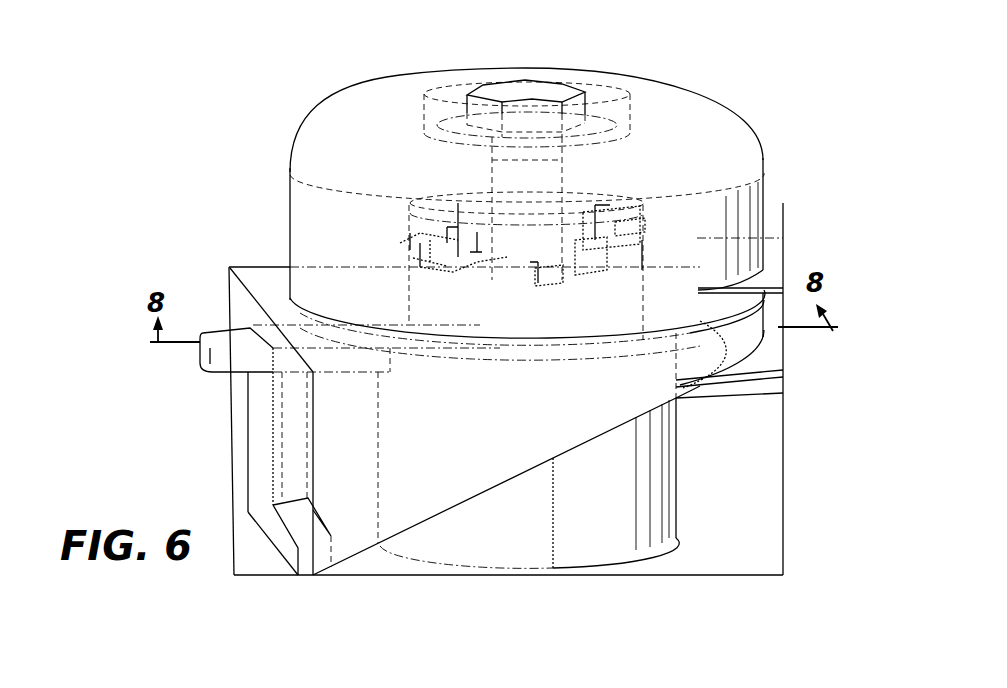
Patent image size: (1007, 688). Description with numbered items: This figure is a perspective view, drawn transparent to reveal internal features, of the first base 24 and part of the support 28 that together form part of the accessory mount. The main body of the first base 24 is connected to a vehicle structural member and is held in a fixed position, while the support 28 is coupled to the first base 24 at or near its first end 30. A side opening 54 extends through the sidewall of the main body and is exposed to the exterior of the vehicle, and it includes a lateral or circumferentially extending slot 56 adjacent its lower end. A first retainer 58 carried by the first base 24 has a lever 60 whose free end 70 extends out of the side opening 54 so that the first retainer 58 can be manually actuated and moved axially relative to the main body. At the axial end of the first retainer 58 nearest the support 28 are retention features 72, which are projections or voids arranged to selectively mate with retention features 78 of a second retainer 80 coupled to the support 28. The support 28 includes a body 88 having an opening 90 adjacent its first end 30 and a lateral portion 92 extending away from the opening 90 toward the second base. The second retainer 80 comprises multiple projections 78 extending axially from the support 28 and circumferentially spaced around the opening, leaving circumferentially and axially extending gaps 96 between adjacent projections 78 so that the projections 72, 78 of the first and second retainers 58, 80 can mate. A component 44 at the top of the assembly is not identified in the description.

The first base 24 is at (786, 95).
The support 28 is at (780, 244).
The first end 30 is at (290, 197).
The fastener 44 is at (560, 82).
The side opening 54 is at (260, 437).
The slot 56 is at (267, 540).
The first retainer 58 is at (630, 330).
The lever 60 is at (220, 327).
The free end 70 is at (210, 362).
The retention features 72 is at (414, 258).
The projections 78 is at (451, 257).
The second retainer 80 is at (641, 220).
The body 88 is at (334, 136).
The opening 90 is at (500, 168).
The lateral portion 92 is at (775, 278).
The gaps 96 is at (630, 252).